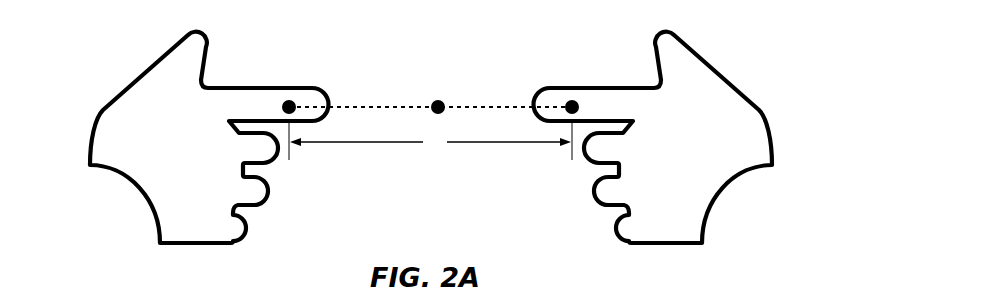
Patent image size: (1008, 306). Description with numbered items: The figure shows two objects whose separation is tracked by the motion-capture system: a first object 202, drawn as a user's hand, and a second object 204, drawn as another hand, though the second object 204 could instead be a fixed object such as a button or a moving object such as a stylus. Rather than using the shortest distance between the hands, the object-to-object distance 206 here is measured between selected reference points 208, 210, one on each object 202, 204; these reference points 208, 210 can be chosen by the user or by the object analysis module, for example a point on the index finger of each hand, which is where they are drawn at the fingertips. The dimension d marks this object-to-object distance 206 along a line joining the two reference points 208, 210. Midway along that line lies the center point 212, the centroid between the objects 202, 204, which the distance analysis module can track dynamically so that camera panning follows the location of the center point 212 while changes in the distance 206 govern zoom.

The first object 202 is at (88, 150).
The second object 204 is at (773, 148).
The object-to-object distance 206 is at (428, 145).
The reference point 208 is at (283, 63).
The reference point 210 is at (577, 63).
The center point 212 is at (446, 74).